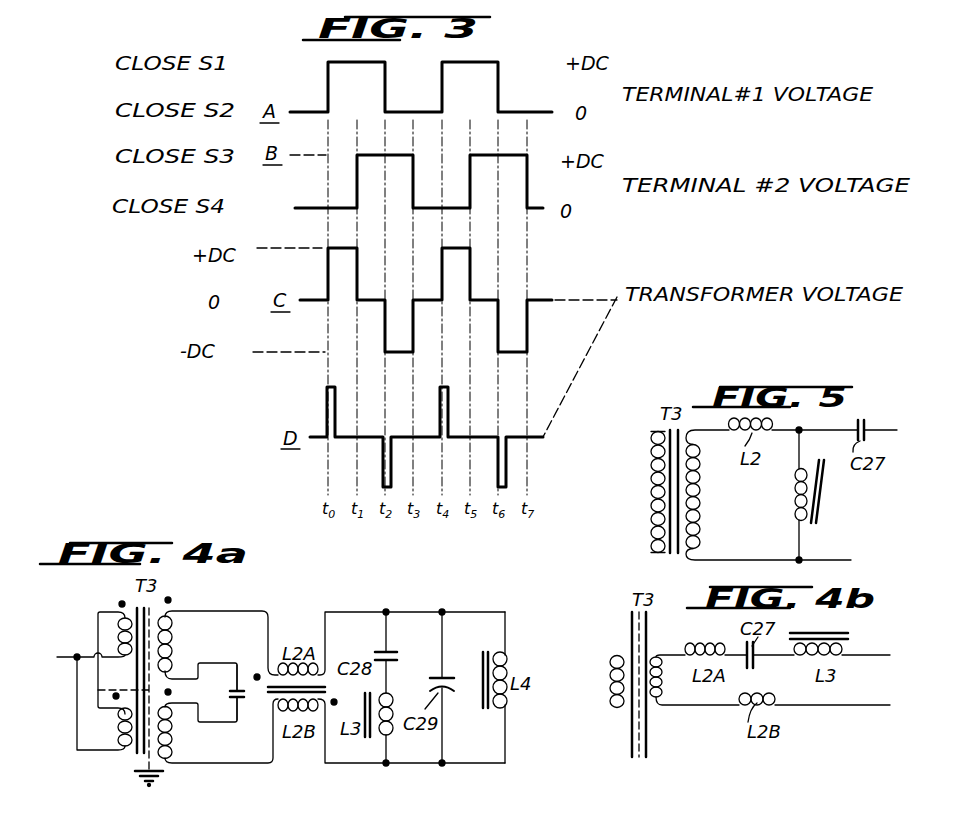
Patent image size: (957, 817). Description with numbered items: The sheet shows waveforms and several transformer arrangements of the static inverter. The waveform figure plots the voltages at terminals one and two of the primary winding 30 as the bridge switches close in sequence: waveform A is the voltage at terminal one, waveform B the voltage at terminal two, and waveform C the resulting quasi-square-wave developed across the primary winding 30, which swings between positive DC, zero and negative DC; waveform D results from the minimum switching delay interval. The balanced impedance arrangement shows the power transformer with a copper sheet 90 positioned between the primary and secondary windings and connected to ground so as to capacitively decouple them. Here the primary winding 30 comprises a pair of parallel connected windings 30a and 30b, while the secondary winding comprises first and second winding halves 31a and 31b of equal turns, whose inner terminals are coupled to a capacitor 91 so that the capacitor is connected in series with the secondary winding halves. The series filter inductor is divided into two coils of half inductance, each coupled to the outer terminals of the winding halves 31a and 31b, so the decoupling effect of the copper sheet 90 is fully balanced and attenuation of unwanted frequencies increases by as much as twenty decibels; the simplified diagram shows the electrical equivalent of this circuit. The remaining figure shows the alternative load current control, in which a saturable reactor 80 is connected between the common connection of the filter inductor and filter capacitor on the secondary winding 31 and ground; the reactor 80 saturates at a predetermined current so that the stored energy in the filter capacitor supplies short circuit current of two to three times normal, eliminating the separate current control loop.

In FIG. 5, the primary winding 30 is at (657, 492).
In FIG. 4b, the primary winding 30 is at (605, 698).
In FIG. 5, the secondary winding 31 is at (700, 499).
In FIG. 4b, the secondary winding 31 is at (663, 713).
In FIG. 5, the saturable reactor 80 is at (792, 499).
In FIG. 4a, the primary winding 30a is at (118, 633).
In FIG. 4a, the primary winding 30b is at (118, 728).
In FIG. 4a, the secondary winding half 31a is at (174, 653).
In FIG. 4a, the secondary winding half 31b is at (174, 725).
In FIG. 4a, the copper sheet 90 is at (171, 692).
In FIG. 4a, the capacitor 91 is at (258, 700).